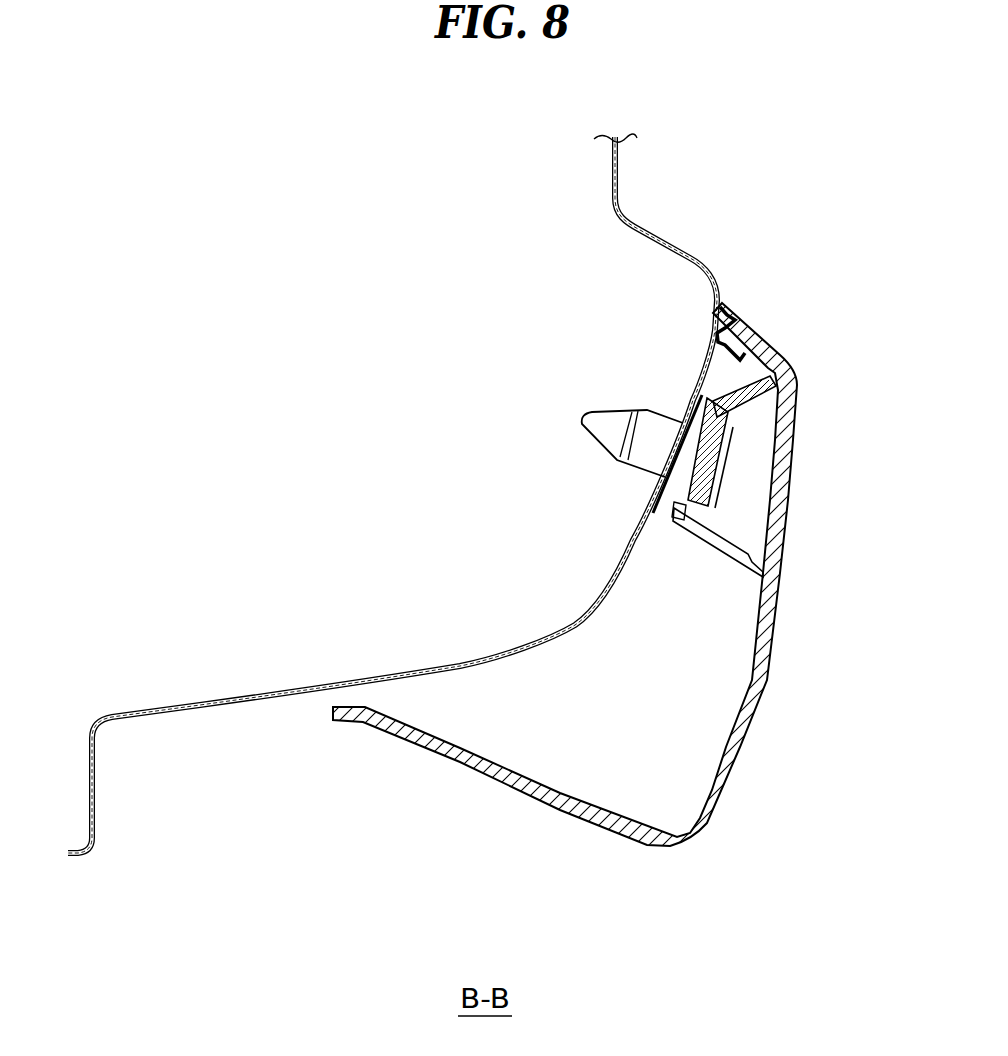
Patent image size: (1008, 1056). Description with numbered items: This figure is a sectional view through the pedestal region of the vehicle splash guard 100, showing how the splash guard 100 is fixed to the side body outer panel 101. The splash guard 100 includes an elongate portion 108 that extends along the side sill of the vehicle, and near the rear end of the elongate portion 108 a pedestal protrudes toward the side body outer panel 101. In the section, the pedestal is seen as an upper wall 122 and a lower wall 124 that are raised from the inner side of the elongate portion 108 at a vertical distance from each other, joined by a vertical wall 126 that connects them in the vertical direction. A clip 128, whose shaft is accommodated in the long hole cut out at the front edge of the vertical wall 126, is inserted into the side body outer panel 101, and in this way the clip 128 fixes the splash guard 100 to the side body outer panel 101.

The splash guard 100 is at (710, 843).
The side body outer panel 101 is at (615, 220).
The elongate portion 108 is at (763, 631).
The upper wall 122 is at (745, 416).
The lower wall 124 is at (723, 548).
The vertical wall 126 is at (672, 522).
The clip 128 is at (633, 412).